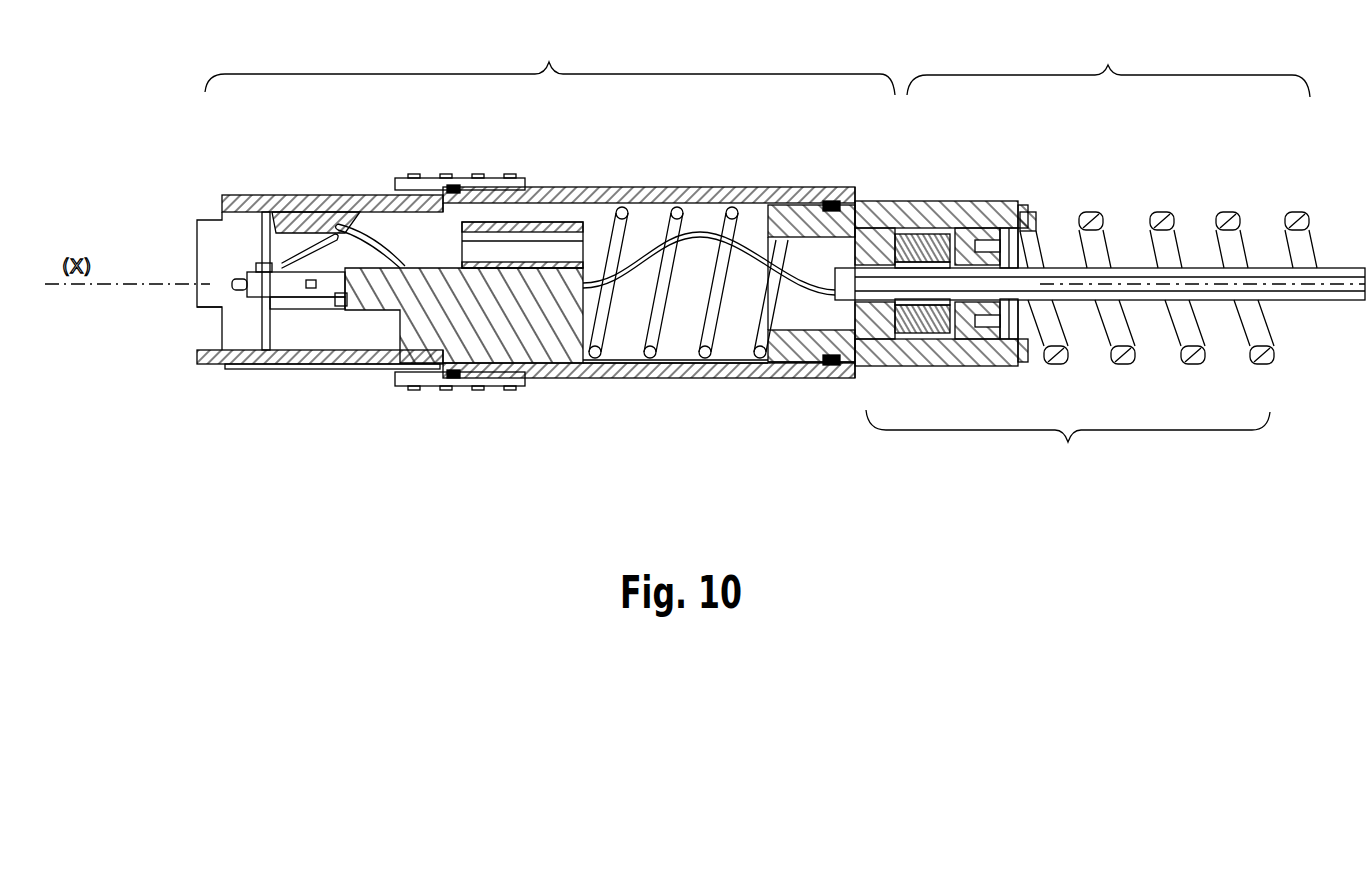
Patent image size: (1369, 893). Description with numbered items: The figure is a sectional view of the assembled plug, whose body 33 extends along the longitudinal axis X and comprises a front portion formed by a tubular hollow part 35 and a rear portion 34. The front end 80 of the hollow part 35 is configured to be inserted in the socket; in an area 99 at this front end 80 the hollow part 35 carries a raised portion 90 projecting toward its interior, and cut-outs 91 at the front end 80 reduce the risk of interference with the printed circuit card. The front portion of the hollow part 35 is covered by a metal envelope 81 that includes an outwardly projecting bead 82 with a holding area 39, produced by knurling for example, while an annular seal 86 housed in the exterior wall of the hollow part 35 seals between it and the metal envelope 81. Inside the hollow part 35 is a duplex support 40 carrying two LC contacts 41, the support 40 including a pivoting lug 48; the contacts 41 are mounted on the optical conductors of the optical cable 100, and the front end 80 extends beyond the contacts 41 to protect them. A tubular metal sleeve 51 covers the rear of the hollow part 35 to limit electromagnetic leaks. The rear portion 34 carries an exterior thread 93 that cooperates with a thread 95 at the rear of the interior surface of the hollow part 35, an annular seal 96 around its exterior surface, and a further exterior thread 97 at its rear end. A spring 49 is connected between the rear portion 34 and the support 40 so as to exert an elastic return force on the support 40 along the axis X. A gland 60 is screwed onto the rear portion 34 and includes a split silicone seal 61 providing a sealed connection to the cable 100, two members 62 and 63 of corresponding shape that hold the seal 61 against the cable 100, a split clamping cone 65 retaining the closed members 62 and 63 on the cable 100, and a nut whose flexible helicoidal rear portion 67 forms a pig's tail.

The body 33 is at (550, 66).
The rear portion 34 is at (845, 187).
The hollow part 35 is at (568, 372).
The holding area 39 is at (490, 180).
The support 40 is at (538, 345).
The LC contacts 41 is at (305, 292).
The lug 48 is at (380, 237).
The spring 49 is at (687, 187).
The metal sleeve 51 is at (610, 187).
The gland 60 is at (1088, 255).
The split seal 61 is at (898, 362).
The member 62 is at (925, 240).
The member 63 is at (940, 330).
The split clamping cone 65 is at (975, 230).
The rear portion of the nut 67 is at (1010, 205).
The front end 80 is at (243, 194).
The metal envelope 81 is at (340, 370).
The bead 82 is at (400, 178).
The annular seal 86 is at (452, 184).
The raised portion 90 is at (274, 195).
The cut-outs 91 is at (208, 330).
The exterior thread 93 is at (785, 187).
The thread 95 is at (790, 372).
The annular seal 96 is at (832, 378).
The exterior thread 97 is at (912, 235).
The area 99 is at (310, 195).
The optical cable 100 is at (1213, 298).